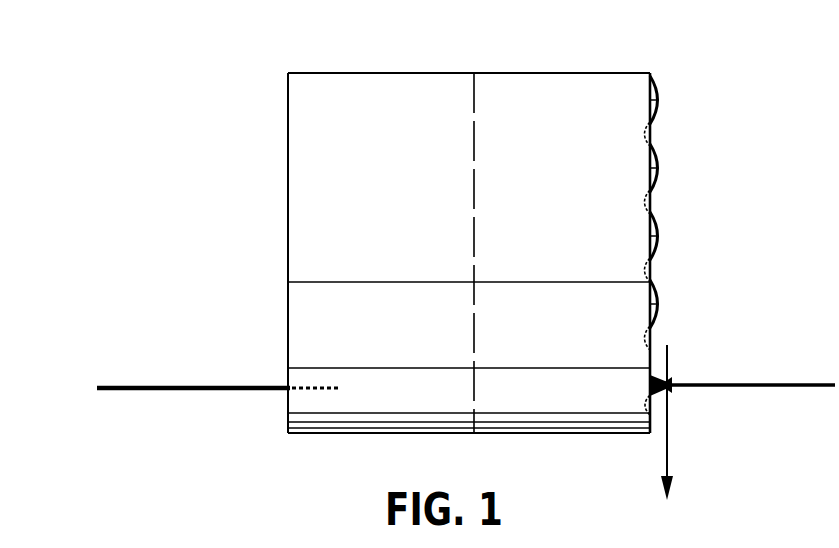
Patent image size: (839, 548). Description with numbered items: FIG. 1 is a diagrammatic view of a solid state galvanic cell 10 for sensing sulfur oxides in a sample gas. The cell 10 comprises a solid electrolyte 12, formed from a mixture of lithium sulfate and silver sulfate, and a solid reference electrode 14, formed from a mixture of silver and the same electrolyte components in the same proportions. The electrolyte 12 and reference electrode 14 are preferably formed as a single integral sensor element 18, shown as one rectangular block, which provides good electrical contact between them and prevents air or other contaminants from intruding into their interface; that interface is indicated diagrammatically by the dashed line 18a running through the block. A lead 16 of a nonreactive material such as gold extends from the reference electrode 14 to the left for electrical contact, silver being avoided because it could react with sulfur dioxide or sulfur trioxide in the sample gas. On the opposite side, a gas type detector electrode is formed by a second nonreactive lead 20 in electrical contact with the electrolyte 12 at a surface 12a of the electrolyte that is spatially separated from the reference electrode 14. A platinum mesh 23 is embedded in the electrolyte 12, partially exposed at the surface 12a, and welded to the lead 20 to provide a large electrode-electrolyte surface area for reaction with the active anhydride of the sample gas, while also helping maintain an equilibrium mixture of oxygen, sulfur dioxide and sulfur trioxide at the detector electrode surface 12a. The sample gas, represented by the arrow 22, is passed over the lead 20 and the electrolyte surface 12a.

The solid state galvanic cell 10 is at (658, 69).
The solid electrolyte 12 is at (571, 93).
The surface of the electrolyte 12a is at (657, 146).
The solid reference electrode 14 is at (333, 85).
The lead 16 is at (198, 387).
The sensor element 18 is at (388, 73).
The dashed line 18a is at (475, 113).
The second nonreactive lead 20 is at (797, 385).
The arrow 22 is at (668, 358).
The platinum mesh 23 is at (663, 393).